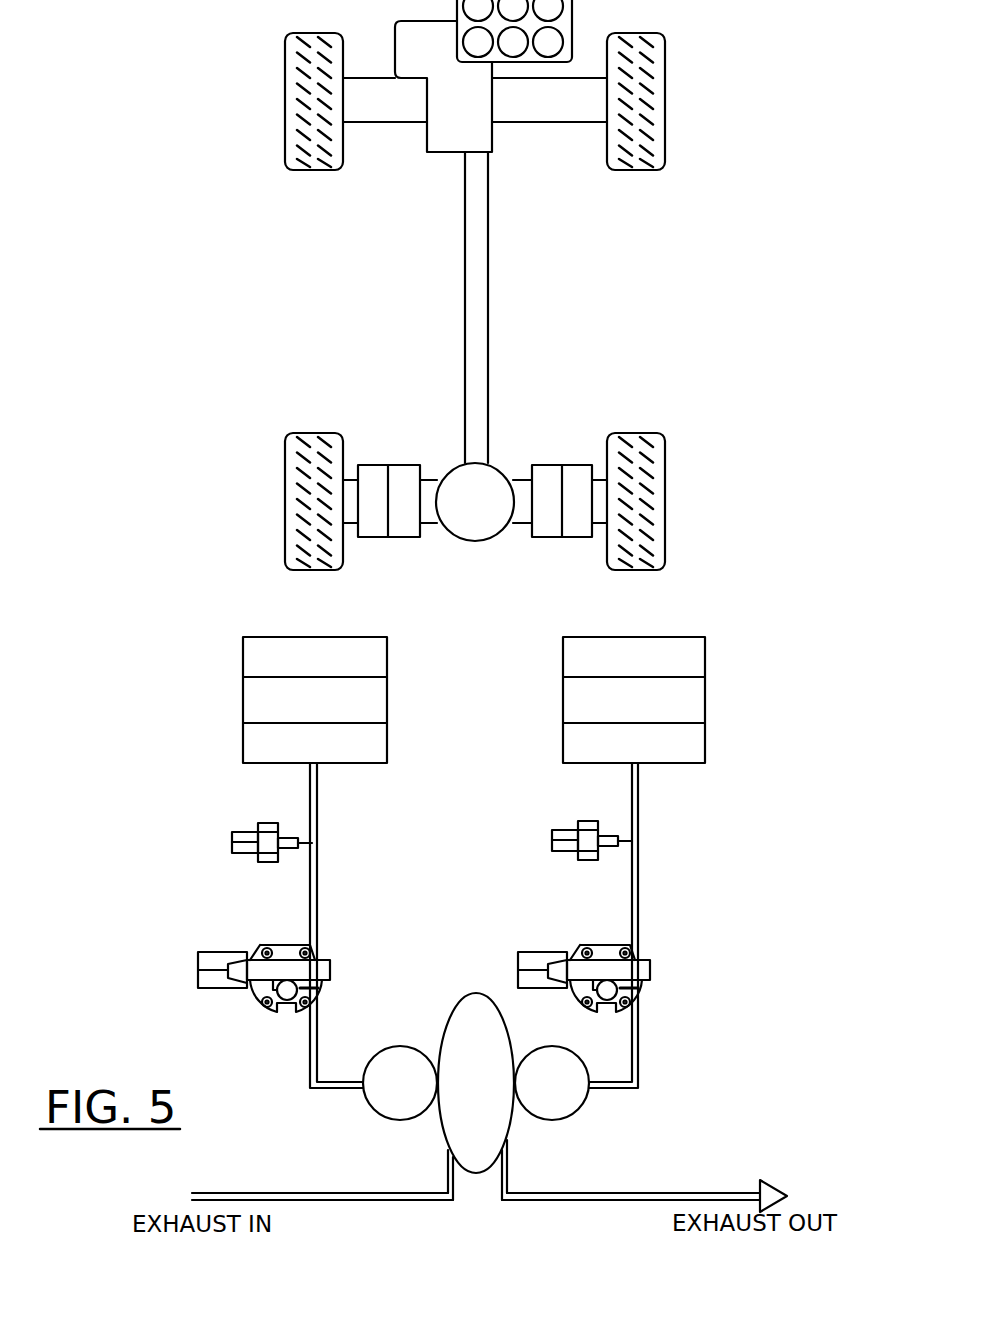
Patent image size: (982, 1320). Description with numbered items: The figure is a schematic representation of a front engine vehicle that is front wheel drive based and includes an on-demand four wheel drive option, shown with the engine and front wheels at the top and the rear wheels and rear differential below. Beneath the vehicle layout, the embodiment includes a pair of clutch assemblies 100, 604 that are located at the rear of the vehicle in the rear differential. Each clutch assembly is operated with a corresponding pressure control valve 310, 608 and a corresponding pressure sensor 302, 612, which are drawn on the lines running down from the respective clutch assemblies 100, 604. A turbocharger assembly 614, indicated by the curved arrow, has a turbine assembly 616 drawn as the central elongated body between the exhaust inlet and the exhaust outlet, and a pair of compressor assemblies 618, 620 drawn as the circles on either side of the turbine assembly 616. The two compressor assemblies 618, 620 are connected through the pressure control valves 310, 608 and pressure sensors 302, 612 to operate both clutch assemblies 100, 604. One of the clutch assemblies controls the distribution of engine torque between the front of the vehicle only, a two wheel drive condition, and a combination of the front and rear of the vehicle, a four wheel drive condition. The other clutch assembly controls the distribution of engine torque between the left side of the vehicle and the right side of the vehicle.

The clutch assembly 100 is at (387, 663).
The clutch assembly 604 is at (705, 657).
The pressure sensor 302 is at (243, 832).
The pressure control valve 310 is at (229, 958).
The pressure sensor 612 is at (562, 830).
The pressure control valve 608 is at (650, 970).
The turbocharger assembly 614 is at (400, 976).
The turbine assembly 616 is at (477, 992).
The compressor assembly 618 is at (383, 1112).
The compressor assembly 620 is at (572, 1112).